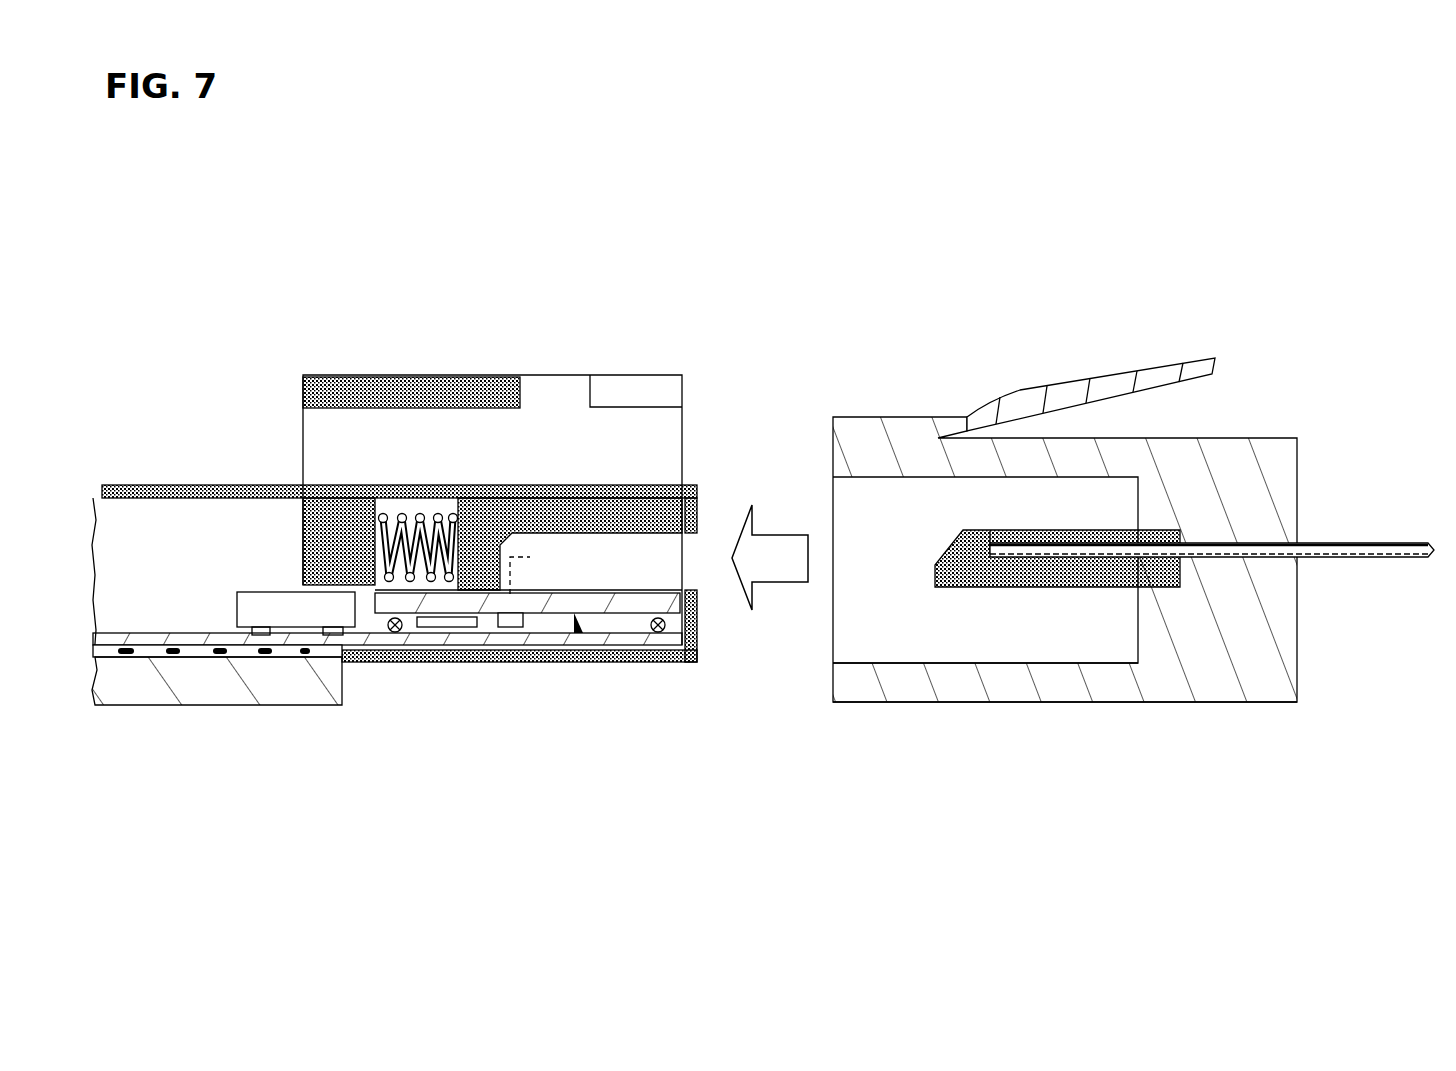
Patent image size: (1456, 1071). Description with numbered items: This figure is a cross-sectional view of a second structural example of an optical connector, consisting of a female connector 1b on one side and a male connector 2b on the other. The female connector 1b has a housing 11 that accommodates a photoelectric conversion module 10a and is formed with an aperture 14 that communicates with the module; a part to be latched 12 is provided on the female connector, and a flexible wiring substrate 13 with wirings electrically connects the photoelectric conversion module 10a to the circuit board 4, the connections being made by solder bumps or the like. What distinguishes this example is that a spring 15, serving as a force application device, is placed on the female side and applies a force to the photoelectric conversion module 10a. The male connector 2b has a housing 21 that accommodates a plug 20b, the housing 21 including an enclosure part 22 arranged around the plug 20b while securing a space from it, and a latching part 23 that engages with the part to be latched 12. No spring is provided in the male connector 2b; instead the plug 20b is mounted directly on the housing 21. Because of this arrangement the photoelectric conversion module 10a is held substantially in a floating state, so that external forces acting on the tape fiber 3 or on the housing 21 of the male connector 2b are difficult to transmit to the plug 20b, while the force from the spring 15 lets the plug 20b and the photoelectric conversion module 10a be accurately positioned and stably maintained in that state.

The female connector 1b is at (185, 308).
The male connector 2b is at (975, 302).
The tape fiber 3 is at (1388, 542).
The circuit board 4 is at (163, 706).
The photoelectric conversion module 10a is at (568, 663).
The housing 11 is at (184, 484).
The part to be latched 12 is at (493, 375).
The flexible wiring substrate 13 is at (451, 660).
The aperture 14 is at (708, 528).
The spring 15 is at (408, 497).
The plug 20b is at (1067, 588).
The housing 21 is at (1284, 436).
The enclosure part 22 is at (937, 703).
The latching part 23 is at (1143, 368).